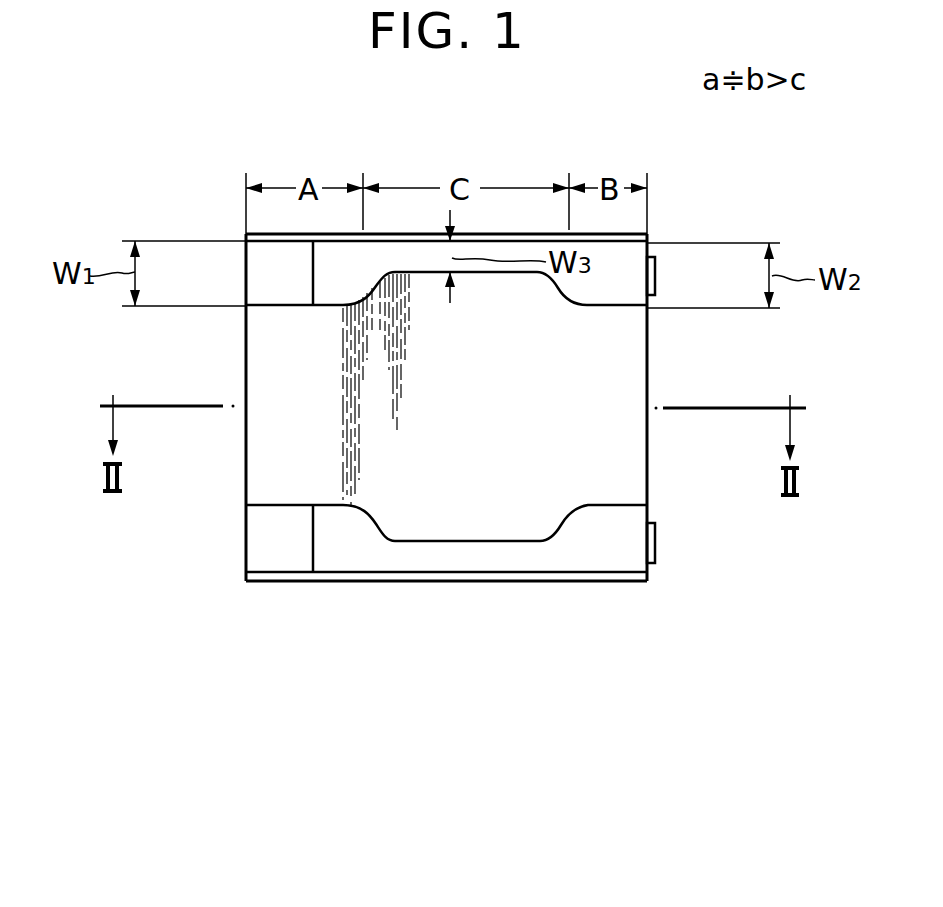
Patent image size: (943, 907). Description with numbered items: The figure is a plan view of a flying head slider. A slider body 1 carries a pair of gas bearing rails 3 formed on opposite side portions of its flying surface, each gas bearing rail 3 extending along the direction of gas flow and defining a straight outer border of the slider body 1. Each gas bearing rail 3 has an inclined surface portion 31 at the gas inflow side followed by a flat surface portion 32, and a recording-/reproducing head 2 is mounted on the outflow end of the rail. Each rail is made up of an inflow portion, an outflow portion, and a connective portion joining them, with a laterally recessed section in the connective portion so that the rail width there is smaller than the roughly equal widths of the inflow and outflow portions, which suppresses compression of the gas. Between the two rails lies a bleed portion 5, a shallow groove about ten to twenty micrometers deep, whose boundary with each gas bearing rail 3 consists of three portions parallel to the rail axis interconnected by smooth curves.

The slider body 1 is at (246, 463).
The recording-/reproducing head 2 is at (657, 278).
The gas bearing rail 3 is at (617, 231).
The inclined surface portion 31 is at (246, 278).
The flat surface portion 32 is at (508, 248).
The bleed portion 5 is at (463, 463).